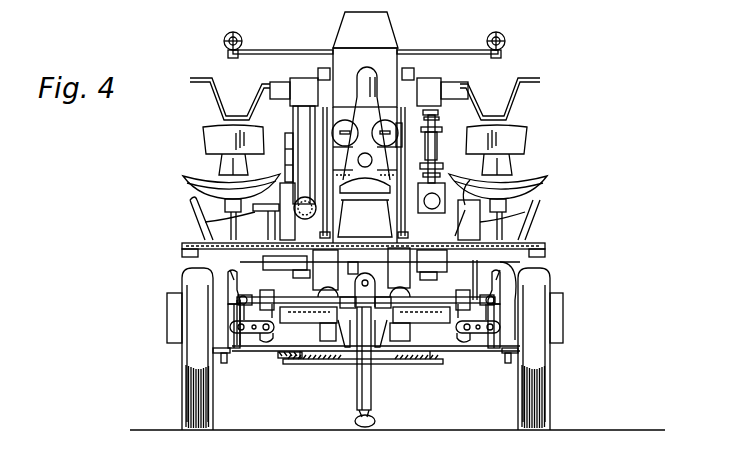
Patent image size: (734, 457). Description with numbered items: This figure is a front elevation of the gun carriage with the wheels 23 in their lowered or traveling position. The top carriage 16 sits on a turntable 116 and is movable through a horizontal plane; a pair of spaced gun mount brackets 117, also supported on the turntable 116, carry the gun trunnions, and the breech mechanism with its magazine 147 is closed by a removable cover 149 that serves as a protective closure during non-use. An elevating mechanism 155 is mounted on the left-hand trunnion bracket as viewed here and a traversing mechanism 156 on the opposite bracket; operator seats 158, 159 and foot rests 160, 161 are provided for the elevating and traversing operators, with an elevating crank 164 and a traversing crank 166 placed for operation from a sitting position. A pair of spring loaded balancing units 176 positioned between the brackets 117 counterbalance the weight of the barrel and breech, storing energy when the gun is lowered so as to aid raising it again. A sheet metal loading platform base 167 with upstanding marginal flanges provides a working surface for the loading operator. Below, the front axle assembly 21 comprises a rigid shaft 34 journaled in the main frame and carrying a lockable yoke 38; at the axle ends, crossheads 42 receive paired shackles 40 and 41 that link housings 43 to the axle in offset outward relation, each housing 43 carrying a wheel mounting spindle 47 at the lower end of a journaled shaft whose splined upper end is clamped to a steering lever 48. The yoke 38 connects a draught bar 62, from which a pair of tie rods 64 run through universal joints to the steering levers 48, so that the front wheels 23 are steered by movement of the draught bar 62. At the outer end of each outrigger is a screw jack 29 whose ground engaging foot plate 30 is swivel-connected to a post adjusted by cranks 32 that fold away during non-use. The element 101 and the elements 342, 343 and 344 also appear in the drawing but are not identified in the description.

The top carriage 16 is at (558, 249).
The front axle assembly 21 is at (438, 330).
The wheels 23 is at (184, 275).
The screw jack 29 is at (395, 263).
The ground engaging foot plate 30 is at (382, 364).
The cranks 32 is at (425, 243).
The axle shaft 34 is at (300, 325).
The yoke 38 is at (299, 356).
The shackle 40 is at (248, 290).
The shackle 41 is at (252, 335).
The crosshead 42 is at (265, 344).
The housing 43 is at (238, 348).
The wheel mounting spindle 47 is at (225, 362).
The steering lever 48 is at (231, 285).
The draught bar 62 is at (358, 384).
The tie rods 64 is at (294, 304).
The ball joint 101 is at (356, 421).
The turntable 116 is at (440, 272).
The gun mount brackets 117 is at (318, 86).
The magazine 147 is at (387, 62).
The removable cover 149 is at (392, 44).
The elevating mechanism 155 is at (286, 122).
The traversing mechanism 156 is at (450, 174).
The operator seat 158 is at (200, 170).
The operator seat 159 is at (520, 168).
The foot rest 160 is at (535, 201).
The foot rest 161 is at (196, 213).
The elevating crank 164 is at (196, 78).
The traversing crank 166 is at (530, 80).
The loading platform base 167 is at (374, 238).
The spring loaded balancing units 176 is at (436, 134).
The cross bar 342 is at (470, 39).
The left valve wheel 343 is at (244, 36).
The right valve wheel 344 is at (506, 38).